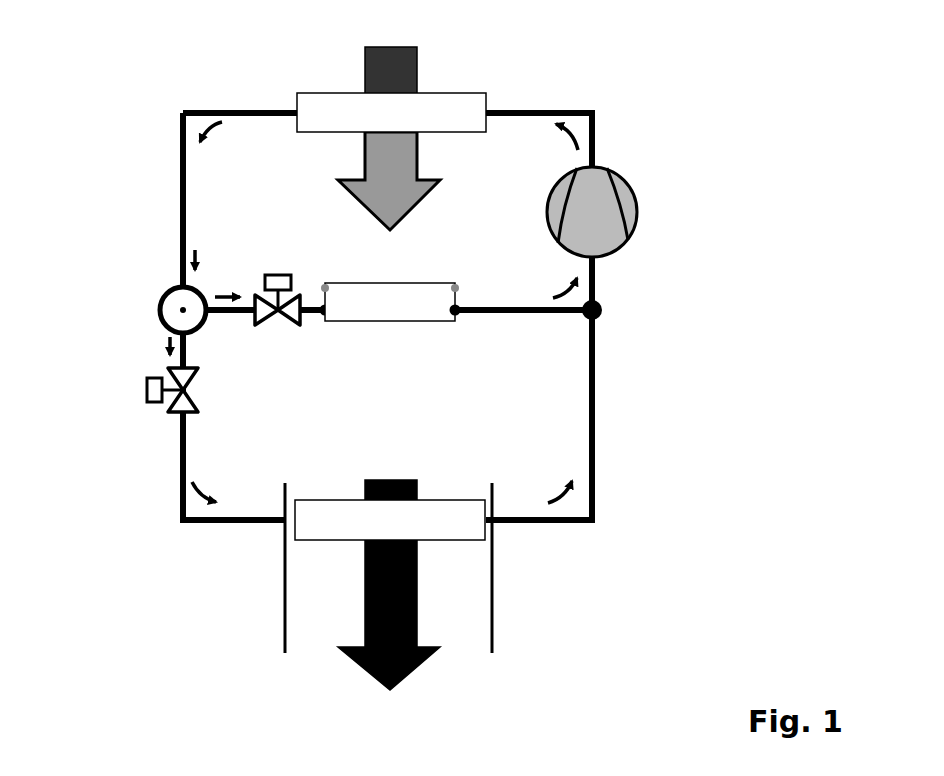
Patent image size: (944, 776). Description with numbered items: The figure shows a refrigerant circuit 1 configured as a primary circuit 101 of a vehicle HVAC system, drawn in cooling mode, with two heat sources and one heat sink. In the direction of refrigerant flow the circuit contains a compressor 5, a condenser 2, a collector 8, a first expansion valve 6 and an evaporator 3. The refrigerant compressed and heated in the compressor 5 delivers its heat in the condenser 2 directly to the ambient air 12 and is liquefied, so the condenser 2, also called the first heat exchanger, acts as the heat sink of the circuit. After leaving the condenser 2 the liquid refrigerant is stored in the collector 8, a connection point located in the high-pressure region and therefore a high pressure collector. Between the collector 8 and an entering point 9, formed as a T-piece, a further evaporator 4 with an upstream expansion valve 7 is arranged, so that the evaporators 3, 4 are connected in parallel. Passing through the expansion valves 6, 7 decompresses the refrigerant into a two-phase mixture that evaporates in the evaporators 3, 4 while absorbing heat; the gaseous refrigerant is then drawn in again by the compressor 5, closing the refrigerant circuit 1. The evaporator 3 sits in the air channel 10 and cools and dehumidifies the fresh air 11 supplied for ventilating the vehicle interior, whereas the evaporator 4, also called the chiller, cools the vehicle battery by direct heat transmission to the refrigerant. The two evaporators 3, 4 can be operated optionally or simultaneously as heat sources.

The refrigerant circuit 1 is at (791, 110).
The primary circuit 101 is at (166, 155).
The condenser 2 is at (320, 112).
The evaporator 3 is at (458, 520).
The evaporator 4 is at (394, 300).
The compressor 5 is at (627, 206).
The first expansion valve 6 is at (147, 383).
The expansion valve 7 is at (278, 275).
The collector 8 is at (183, 310).
The entering point 9 is at (598, 316).
The air channel 10 is at (302, 568).
The fresh air 11 is at (345, 657).
The ambient air 12 is at (420, 60).